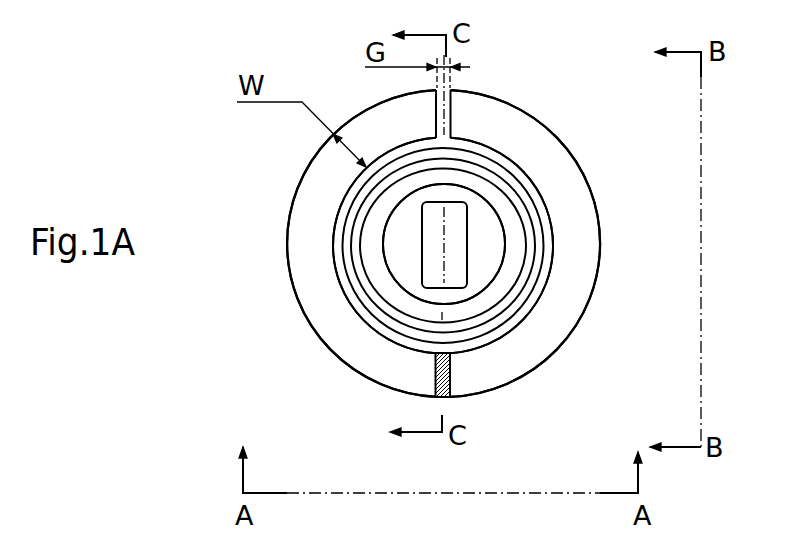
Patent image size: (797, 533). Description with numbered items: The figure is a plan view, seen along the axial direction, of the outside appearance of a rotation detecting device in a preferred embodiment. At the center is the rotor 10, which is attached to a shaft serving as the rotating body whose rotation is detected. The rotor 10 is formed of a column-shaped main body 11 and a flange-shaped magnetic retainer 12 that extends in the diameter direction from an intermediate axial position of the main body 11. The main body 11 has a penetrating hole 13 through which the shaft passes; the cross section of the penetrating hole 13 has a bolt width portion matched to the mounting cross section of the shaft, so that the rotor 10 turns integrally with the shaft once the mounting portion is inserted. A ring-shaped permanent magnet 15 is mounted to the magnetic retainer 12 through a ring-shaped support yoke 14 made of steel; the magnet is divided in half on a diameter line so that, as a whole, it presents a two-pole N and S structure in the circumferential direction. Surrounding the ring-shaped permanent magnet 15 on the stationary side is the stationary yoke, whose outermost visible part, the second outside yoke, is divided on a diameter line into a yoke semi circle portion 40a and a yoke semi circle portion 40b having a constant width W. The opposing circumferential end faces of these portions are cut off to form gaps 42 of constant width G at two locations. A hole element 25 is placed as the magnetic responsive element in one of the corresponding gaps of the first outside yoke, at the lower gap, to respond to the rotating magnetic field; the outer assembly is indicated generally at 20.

The rotor 10 is at (383, 275).
The main body 11 is at (400, 225).
The magnetic retainer 12 is at (368, 240).
The penetrating hole 13 is at (457, 233).
The ring-shaped support yoke 14 is at (512, 303).
The ring-shaped permanent magnet 15 is at (545, 285).
The housing 20 is at (367, 107).
The hole element 25 is at (452, 382).
The yoke semi circle portion 40a is at (352, 372).
The yoke semi circle portion 40b is at (517, 363).
The gap 42 is at (452, 108).